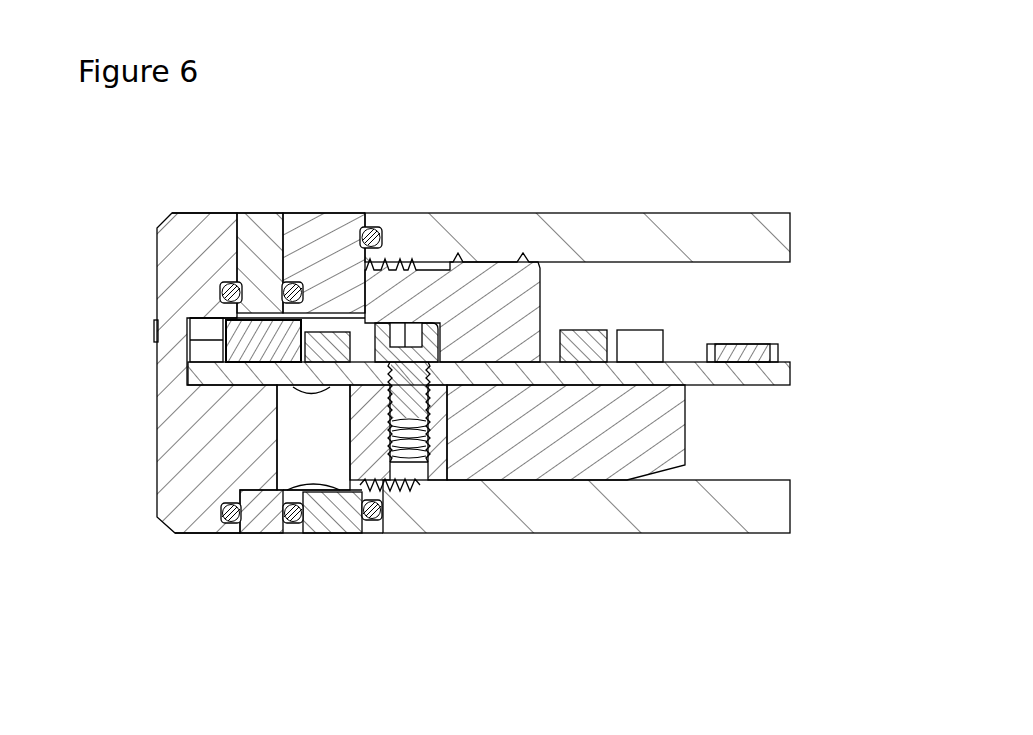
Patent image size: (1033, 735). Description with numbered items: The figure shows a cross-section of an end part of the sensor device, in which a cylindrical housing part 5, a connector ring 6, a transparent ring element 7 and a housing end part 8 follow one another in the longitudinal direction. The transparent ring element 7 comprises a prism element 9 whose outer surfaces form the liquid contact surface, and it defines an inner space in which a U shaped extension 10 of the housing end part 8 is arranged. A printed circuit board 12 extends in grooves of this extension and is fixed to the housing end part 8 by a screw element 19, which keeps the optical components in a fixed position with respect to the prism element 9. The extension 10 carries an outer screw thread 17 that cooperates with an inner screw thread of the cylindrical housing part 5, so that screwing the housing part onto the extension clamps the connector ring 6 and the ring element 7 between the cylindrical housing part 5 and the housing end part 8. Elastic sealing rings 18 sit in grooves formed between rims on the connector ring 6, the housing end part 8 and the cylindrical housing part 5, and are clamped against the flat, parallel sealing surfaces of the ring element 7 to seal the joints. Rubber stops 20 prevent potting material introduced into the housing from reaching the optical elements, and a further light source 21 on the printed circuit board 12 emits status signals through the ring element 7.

The cylindrical housing part 5 is at (685, 232).
The connector ring 6 is at (340, 228).
The transparent ring element 7 is at (258, 518).
The housing end part 8 is at (180, 445).
The prism element 9 is at (262, 232).
The U shaped extension 10 is at (355, 420).
The printed circuit board 12 is at (648, 373).
The outer screw thread 17 is at (392, 487).
The elastic sealing rings 18 is at (232, 522).
The screw element 19 is at (413, 363).
The rubber stops 20 is at (485, 303).
The further light source 21 is at (250, 338).